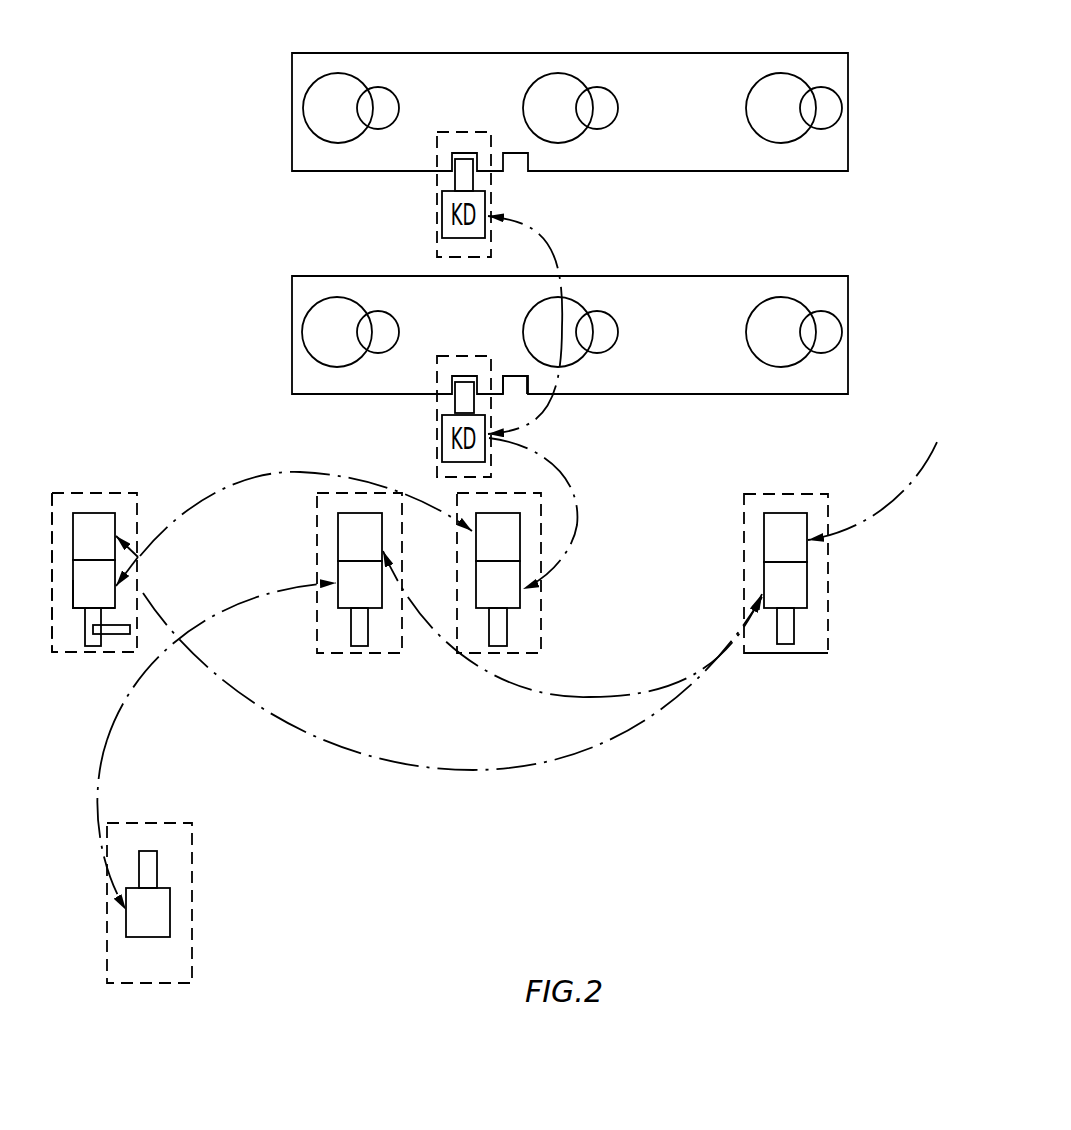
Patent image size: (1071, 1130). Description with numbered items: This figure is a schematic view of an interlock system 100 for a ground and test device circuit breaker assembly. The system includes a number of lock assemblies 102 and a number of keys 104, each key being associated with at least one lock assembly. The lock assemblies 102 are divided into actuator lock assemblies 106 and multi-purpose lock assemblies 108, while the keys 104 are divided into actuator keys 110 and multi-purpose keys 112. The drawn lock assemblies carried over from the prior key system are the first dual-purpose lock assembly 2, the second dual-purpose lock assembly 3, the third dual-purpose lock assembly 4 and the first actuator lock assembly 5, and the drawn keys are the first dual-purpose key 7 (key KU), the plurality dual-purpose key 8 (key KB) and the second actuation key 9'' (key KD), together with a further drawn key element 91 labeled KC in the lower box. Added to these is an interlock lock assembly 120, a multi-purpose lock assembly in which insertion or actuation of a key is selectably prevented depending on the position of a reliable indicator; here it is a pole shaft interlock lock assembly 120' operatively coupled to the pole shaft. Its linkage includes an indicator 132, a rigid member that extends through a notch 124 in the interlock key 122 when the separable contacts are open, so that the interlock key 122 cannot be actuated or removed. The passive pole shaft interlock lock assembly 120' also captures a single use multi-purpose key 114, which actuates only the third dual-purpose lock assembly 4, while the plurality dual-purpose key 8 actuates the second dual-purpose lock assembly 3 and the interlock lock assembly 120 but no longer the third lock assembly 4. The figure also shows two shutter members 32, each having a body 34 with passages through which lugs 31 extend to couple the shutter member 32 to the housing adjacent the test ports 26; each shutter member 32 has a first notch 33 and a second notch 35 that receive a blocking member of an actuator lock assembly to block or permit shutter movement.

The first dual-purpose lock assembly 2 is at (752, 500).
The second dual-purpose lock assembly 3 is at (320, 557).
The third dual-purpose lock assembly 4 is at (533, 493).
The first actuator lock assembly 5 is at (345, 603).
The first dual-purpose key 7 is at (780, 520).
The plurality dual-purpose key 8 is at (105, 520).
The second actuation key 9'' is at (529, 594).
The test port 26 is at (382, 96).
The lug 31 is at (318, 108).
The shutter member 32 is at (310, 62).
The first notch 33 is at (466, 382).
The body 34 is at (435, 62).
The second notch 35 is at (523, 377).
The component KC 91 is at (171, 910).
The interlock system 100 is at (723, 803).
The lock assemblies 102 is at (852, 570).
The keys 104 is at (843, 629).
The actuator lock assemblies 106 is at (272, 997).
The multi-purpose lock assemblies 108 is at (863, 498).
The actuator keys 110 is at (220, 878).
The multi-purpose keys 112 is at (802, 676).
The single use multi-purpose key 114 is at (112, 597).
The interlock lock assembly 120 is at (115, 543).
The pole shaft interlock lock assembly 120' is at (70, 543).
The interlock key 122 is at (73, 603).
The notch 124 is at (98, 646).
The indicator 132 is at (122, 634).